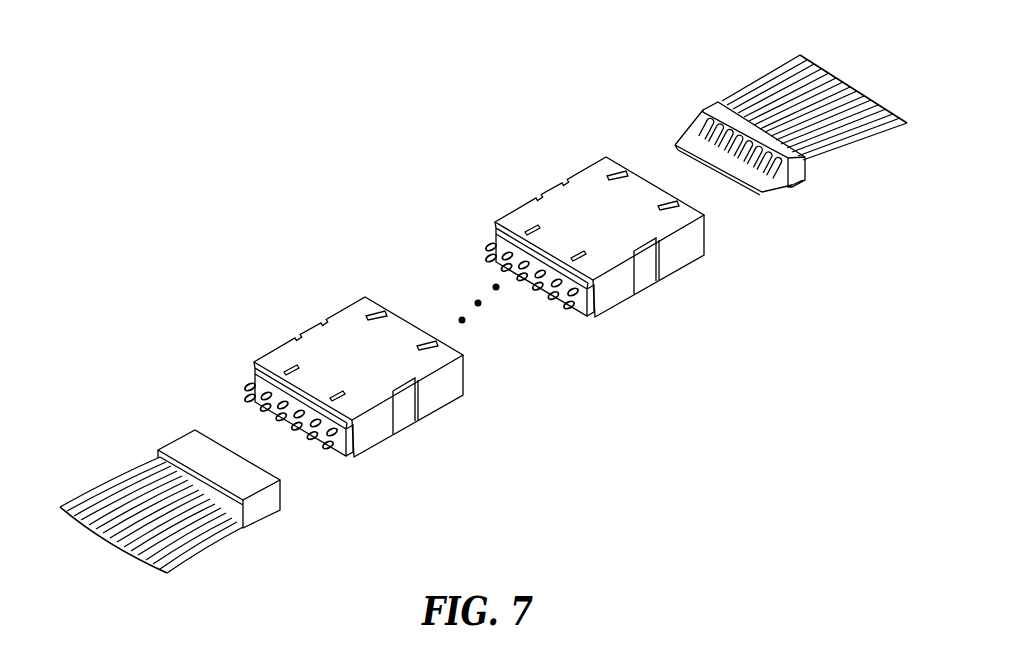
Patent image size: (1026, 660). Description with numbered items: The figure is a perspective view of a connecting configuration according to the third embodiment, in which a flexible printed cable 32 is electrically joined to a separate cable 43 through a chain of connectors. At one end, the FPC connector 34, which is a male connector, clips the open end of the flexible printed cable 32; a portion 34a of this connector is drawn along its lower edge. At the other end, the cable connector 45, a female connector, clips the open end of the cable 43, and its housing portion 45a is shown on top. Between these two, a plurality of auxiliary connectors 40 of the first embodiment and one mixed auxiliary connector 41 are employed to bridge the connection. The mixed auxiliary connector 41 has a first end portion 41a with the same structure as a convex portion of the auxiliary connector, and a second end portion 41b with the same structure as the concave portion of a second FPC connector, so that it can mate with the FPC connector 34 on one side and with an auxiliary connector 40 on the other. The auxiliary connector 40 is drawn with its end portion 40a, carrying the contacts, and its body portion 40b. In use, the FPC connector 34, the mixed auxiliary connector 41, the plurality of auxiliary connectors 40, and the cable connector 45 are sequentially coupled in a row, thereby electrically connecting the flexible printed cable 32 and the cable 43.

The flexible printed cable 32 is at (770, 92).
The FPC connector 34 is at (785, 178).
The connector flange 34a is at (770, 188).
The auxiliary connector 40 is at (353, 358).
The connector terminals 40a is at (342, 458).
The connector housing 40b is at (408, 322).
The mixed auxiliary connector 41 is at (586, 219).
The first end portion 41a is at (578, 314).
The second end portion 41b is at (650, 182).
The cable 43 is at (128, 488).
The cable connector 45 is at (186, 431).
The connector housing 45a is at (225, 448).